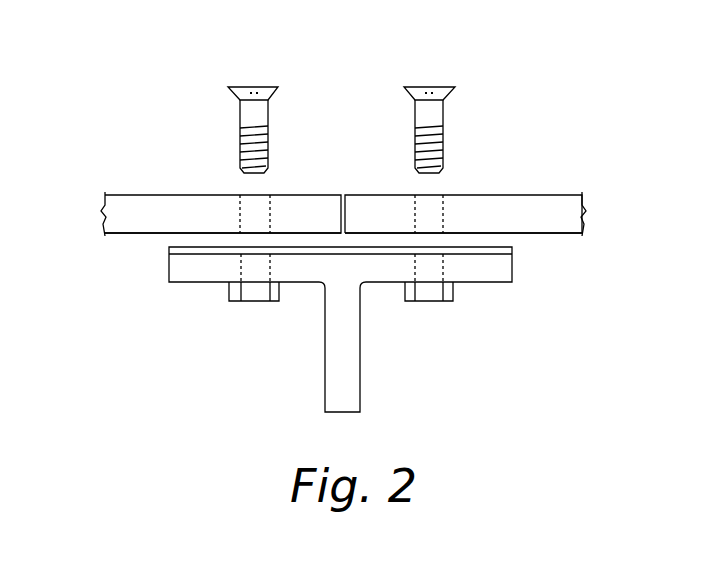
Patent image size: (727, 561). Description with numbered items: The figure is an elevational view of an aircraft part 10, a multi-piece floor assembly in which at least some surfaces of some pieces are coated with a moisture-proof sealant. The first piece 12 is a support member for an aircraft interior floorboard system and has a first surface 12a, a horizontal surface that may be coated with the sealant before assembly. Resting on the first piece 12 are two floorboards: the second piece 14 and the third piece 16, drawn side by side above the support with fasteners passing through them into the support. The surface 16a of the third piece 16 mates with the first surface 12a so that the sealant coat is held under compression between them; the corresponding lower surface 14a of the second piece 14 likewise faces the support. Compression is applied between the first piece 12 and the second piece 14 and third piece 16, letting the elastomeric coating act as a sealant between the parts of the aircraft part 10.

The aircraft part 10 is at (140, 100).
The first piece 12 is at (203, 283).
The first surface 12a is at (483, 255).
The second piece 14 is at (517, 197).
The lower surface of right panel 14a is at (530, 235).
The third piece 16 is at (165, 195).
The mating surface 16a is at (157, 233).